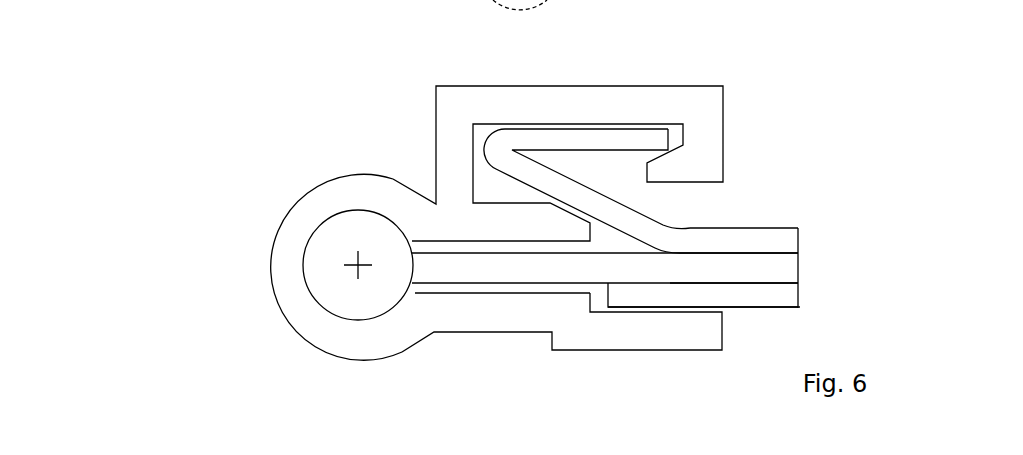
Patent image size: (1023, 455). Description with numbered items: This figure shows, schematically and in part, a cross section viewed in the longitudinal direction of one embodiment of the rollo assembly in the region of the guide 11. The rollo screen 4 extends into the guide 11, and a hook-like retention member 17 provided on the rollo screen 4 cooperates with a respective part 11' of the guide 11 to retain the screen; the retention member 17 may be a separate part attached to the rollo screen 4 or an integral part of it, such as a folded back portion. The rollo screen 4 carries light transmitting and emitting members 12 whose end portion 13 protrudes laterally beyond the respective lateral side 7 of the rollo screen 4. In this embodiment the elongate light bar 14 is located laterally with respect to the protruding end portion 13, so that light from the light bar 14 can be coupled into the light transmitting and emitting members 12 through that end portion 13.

The rollo screen 4 is at (718, 243).
The lateral side 7 is at (617, 293).
The guide 11 is at (562, 345).
The part of the guide 11' is at (620, 125).
The light transmitting and emitting members 12 is at (770, 270).
The end portion 13 is at (423, 262).
The elongate light bar 14 is at (338, 250).
The retention member 17 is at (607, 138).